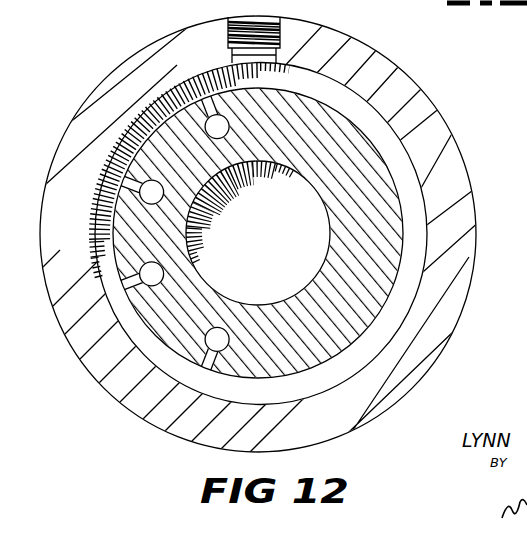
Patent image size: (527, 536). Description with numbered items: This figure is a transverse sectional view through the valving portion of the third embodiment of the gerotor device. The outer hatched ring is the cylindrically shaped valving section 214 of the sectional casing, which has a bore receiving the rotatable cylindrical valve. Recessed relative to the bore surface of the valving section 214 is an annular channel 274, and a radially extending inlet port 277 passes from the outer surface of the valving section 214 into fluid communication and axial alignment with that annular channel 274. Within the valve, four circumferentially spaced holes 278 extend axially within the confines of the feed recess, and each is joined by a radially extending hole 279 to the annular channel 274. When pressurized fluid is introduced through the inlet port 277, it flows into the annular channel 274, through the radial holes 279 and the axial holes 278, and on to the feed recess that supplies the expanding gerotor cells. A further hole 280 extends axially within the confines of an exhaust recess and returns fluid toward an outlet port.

The valving section 214 is at (446, 305).
The annular channel 274 is at (396, 296).
The inlet port 277 is at (237, 17).
The axially extending holes 278 is at (229, 132).
The radially extending holes 279 is at (222, 108).
The hole 280 is at (374, 182).